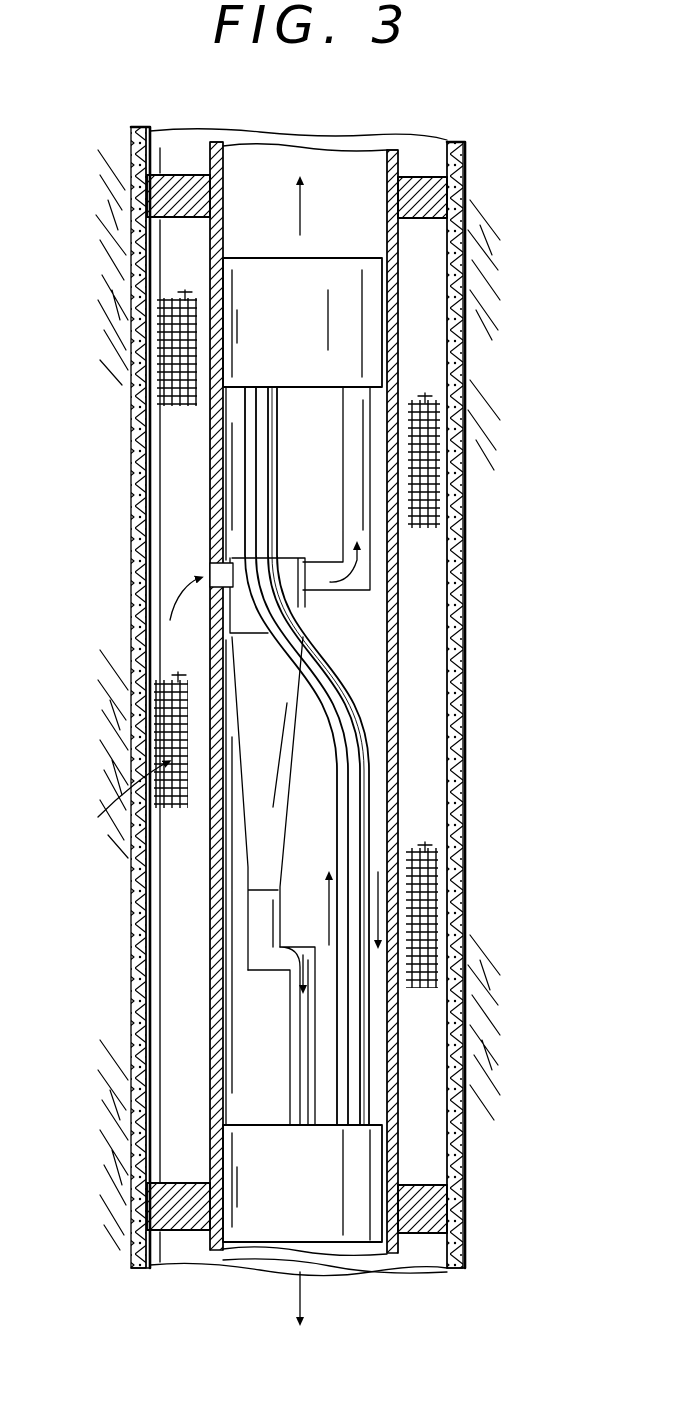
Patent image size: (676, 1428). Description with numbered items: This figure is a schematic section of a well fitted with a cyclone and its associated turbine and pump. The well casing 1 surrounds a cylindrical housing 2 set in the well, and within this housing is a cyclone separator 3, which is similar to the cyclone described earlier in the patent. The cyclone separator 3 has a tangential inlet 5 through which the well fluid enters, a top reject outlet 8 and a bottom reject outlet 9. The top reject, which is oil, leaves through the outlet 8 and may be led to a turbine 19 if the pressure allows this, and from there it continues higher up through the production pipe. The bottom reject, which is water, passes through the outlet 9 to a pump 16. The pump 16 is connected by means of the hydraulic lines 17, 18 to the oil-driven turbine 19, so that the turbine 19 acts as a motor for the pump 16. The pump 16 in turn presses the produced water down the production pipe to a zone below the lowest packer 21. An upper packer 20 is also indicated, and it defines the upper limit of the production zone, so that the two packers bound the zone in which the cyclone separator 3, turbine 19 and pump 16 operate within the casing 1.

The casing 1 is at (465, 712).
The cylindrical housing 2 is at (400, 823).
The cyclone separator 3 is at (268, 755).
The tangential inlet 5 is at (210, 566).
The top reject outlet 8 is at (372, 576).
The bottom reject outlet 9 is at (290, 1040).
The pump 16 is at (363, 1157).
The hydraulic line 17 is at (370, 863).
The hydraulic line 18 is at (348, 1023).
The turbine 19 is at (362, 318).
The upper packer 20 is at (428, 189).
The lowest packer 21 is at (443, 1207).